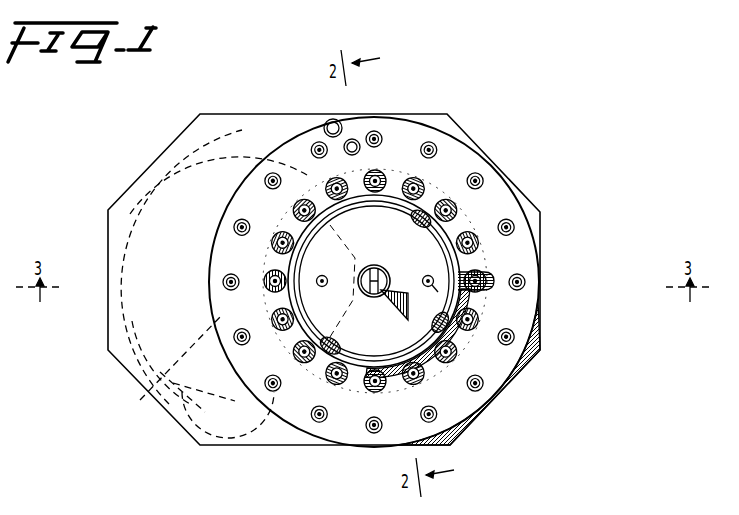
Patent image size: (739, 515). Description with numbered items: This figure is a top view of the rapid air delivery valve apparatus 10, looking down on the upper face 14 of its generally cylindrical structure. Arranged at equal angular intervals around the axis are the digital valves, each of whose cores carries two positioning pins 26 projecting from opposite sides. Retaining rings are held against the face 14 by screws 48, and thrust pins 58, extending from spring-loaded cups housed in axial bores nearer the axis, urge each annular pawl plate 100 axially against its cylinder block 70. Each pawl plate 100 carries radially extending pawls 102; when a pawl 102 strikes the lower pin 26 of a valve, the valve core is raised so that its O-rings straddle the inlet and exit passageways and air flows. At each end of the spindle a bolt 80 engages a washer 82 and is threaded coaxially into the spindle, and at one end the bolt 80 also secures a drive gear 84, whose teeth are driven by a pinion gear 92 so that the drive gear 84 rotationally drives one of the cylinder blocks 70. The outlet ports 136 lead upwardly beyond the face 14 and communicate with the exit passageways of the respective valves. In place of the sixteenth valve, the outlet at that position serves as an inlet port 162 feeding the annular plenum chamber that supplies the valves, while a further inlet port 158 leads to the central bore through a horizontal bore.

The valve apparatus 10 is at (468, 94).
The upper face 14 is at (497, 186).
The positioning pins 26 is at (300, 275).
The screws 48 is at (430, 205).
The thrust pins 58 is at (260, 160).
The cylinder block 70 is at (398, 340).
The bolt 80 is at (392, 290).
The washer 82 is at (458, 352).
The drive gear 84 is at (205, 447).
The pinion gear 92 is at (148, 402).
The pawl plate 100 is at (444, 238).
The pawls 102 is at (494, 282).
The outlet ports 136 is at (383, 138).
The inlet port 158 is at (356, 140).
The inlet port 162 is at (330, 120).